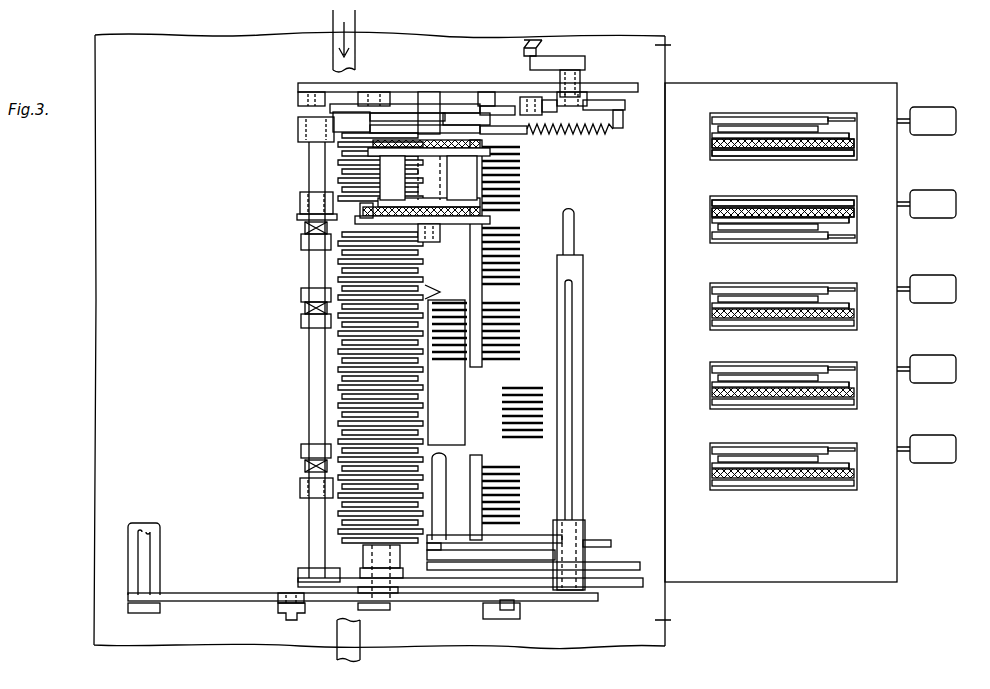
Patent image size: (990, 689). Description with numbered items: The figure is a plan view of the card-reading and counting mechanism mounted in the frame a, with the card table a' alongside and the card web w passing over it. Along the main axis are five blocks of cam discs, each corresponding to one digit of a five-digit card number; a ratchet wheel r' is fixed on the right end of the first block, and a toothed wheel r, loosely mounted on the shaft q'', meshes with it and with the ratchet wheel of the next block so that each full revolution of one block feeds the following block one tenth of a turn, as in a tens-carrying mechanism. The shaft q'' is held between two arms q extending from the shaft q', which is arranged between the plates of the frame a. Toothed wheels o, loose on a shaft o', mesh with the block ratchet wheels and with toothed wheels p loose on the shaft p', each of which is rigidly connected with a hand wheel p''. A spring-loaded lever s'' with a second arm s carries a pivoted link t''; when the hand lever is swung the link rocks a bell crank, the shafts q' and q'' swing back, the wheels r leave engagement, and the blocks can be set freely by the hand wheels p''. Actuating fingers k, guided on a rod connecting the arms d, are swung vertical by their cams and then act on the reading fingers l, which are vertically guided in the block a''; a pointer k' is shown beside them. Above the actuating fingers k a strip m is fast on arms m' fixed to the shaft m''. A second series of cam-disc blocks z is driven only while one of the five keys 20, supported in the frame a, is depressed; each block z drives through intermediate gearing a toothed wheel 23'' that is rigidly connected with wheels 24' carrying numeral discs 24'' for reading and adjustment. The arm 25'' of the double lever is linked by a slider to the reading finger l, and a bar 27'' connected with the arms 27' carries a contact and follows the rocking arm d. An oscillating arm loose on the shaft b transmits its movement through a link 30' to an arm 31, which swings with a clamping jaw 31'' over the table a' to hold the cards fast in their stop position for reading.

The web w is at (366, 633).
The table a' is at (671, 332).
The block of cam discs z is at (546, 56).
The second arm of lever s is at (549, 74).
The lever s'' is at (617, 111).
The link t'' is at (541, 332).
The ratchet wheel r' is at (317, 164).
The hand wheel p'' is at (436, 180).
The shaft p' is at (428, 178).
The toothed wheel p is at (439, 222).
The shaft q' is at (303, 360).
The arm q is at (299, 350).
The toothed wheel r is at (302, 220).
The toothed wheel o is at (314, 236).
The shaft o' is at (329, 278).
The shaft q'' is at (303, 365).
The block a'' is at (455, 372).
The actuating finger k is at (425, 442).
The contact piece k' is at (468, 295).
The reading finger l is at (437, 368).
The arm of double lever 25'' is at (526, 400).
The rod end 27' is at (587, 232).
The shaft b is at (583, 270).
The shaft m'' is at (590, 400).
The strip or bar m is at (449, 494).
The bar or strip 27'' is at (498, 459).
The arm m' is at (542, 523).
The arm d is at (505, 558).
The link 30' is at (306, 610).
The arm 31 is at (363, 586).
The clamping jaw 31'' is at (161, 568).
The frame a is at (781, 345).
The toothed wheel 23'' is at (799, 178).
The wheel 24' is at (763, 181).
The numeral disc 24'' is at (763, 181).
The key 20 is at (964, 204).